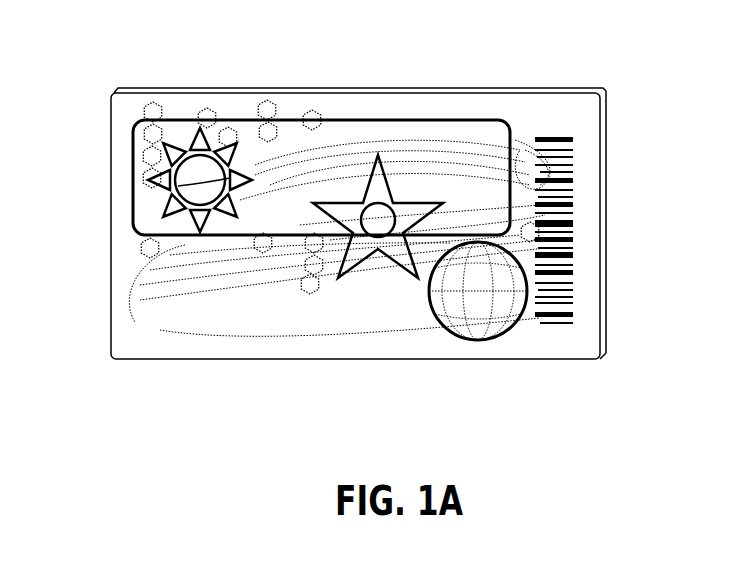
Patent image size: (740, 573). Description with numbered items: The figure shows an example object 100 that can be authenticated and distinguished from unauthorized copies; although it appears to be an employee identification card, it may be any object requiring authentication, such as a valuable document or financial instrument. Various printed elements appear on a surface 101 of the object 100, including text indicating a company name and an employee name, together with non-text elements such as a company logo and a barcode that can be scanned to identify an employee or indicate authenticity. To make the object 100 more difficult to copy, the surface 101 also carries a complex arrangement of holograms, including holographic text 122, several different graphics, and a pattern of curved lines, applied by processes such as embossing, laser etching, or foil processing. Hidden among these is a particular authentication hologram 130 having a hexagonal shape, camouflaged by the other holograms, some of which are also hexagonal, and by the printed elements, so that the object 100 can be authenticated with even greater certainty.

The object 100 is at (652, 445).
The surface 101 is at (122, 230).
The text 122 is at (160, 329).
The authentication hologram 130 is at (310, 292).